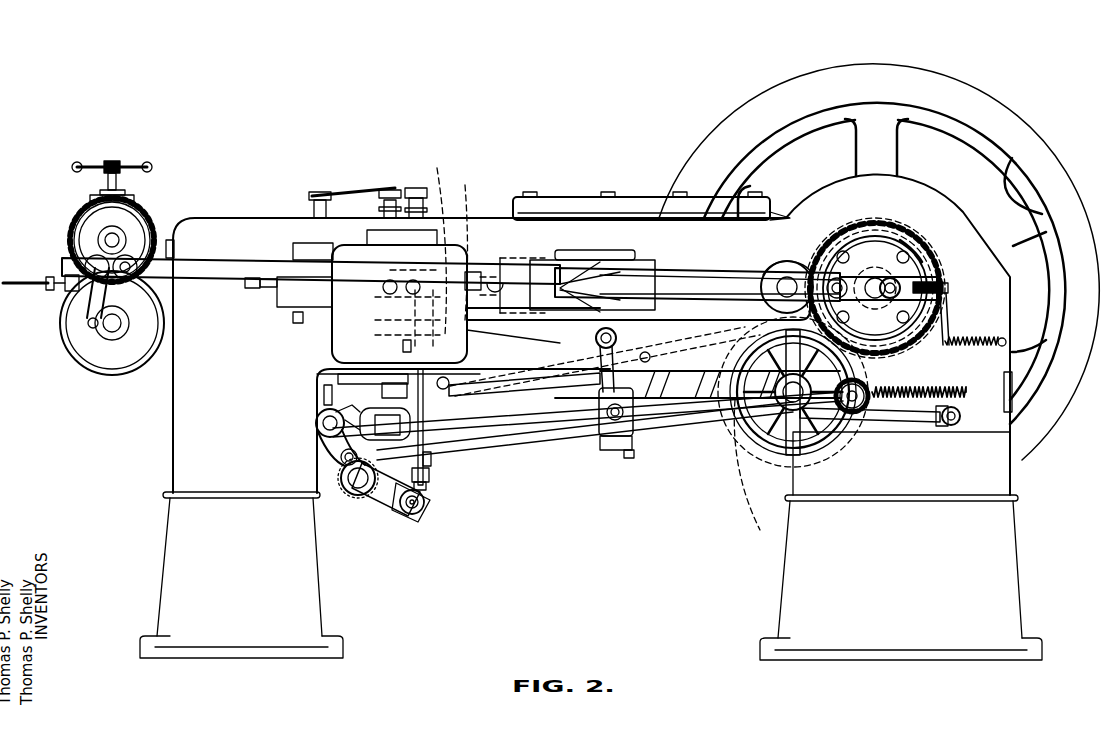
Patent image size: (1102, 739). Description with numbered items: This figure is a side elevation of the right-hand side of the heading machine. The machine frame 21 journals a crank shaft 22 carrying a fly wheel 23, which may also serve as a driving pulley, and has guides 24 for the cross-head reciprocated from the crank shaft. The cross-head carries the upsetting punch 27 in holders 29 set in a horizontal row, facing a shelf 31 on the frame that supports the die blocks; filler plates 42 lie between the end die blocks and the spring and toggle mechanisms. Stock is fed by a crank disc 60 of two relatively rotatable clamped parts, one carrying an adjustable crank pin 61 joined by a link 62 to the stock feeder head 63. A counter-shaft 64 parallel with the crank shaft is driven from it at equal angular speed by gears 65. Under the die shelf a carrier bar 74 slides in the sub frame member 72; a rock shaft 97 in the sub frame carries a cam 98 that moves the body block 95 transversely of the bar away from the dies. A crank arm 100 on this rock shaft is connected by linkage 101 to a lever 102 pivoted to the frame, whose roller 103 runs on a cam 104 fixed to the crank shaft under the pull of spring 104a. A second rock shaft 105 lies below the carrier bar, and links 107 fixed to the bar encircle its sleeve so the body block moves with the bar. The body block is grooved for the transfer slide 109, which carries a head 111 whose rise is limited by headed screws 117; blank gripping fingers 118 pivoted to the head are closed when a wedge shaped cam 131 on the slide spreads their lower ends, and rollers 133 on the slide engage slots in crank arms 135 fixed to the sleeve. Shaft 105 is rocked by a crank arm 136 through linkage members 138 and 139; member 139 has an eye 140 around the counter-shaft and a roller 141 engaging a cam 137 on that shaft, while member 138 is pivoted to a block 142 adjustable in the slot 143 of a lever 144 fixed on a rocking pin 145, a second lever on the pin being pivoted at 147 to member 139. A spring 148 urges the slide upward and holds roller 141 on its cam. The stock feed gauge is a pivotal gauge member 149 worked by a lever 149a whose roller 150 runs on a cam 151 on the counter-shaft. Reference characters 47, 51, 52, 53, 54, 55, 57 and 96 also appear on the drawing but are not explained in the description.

The machine frame 21 is at (591, 417).
The crank shaft 22 is at (838, 232).
The fly wheel 23 is at (879, 262).
The guides 24 is at (568, 197).
The upsetting punch 27 is at (510, 298).
The holders 29 is at (553, 263).
The shelf 31 is at (345, 332).
The filler plates 42 is at (435, 242).
The bar 47 is at (322, 193).
The slide block 51 is at (598, 265).
The disc 52 is at (838, 252).
The rod end 53 is at (786, 262).
The plate 54 is at (833, 270).
The ring 55 is at (860, 232).
The wedge 57 is at (640, 268).
The crank disc 60 is at (884, 258).
The crank pin 61 is at (893, 278).
The link 62 is at (502, 285).
The stock feeder head 63 is at (70, 234).
The counter-shaft 64 is at (830, 447).
The gears 65 is at (870, 390).
The sub frame member 72 is at (376, 380).
The carrier bar 74 is at (412, 416).
The body block 95 is at (432, 458).
The lever 96 is at (322, 408).
The rock shaft 97 is at (318, 432).
The cam 98 is at (322, 390).
The crank arm 100 is at (345, 478).
The linkage 101 is at (545, 440).
The lever 102 is at (950, 358).
The roller 103 is at (946, 288).
The cam 104 is at (910, 242).
The spring 104a is at (955, 340).
The second rock shaft 105 is at (352, 495).
The links 107 is at (400, 502).
The transfer slide 109 is at (430, 490).
The head 111 is at (448, 390).
The headed screws 117 is at (404, 350).
The blank gripping fingers 118 is at (470, 333).
The wedge shaped cam 131 is at (432, 476).
The rollers 133 is at (420, 514).
The crank arms 135 is at (425, 505).
The crank arm 136 is at (340, 456).
The cam 137 is at (770, 460).
The linkage member 138 is at (577, 440).
The linkage member 139 is at (655, 396).
The eye 140 is at (783, 470).
The roller 141 is at (915, 420).
The block 142 is at (655, 432).
The slot 143 is at (630, 460).
The lever 144 is at (600, 404).
The rocking pin 145 is at (596, 338).
The pivotal connection 147 is at (644, 376).
The spring 148 is at (20, 287).
The pivotal gauge member 149 is at (464, 242).
The lever 149a is at (495, 385).
The roller 150 is at (800, 332).
The cam 151 is at (740, 340).